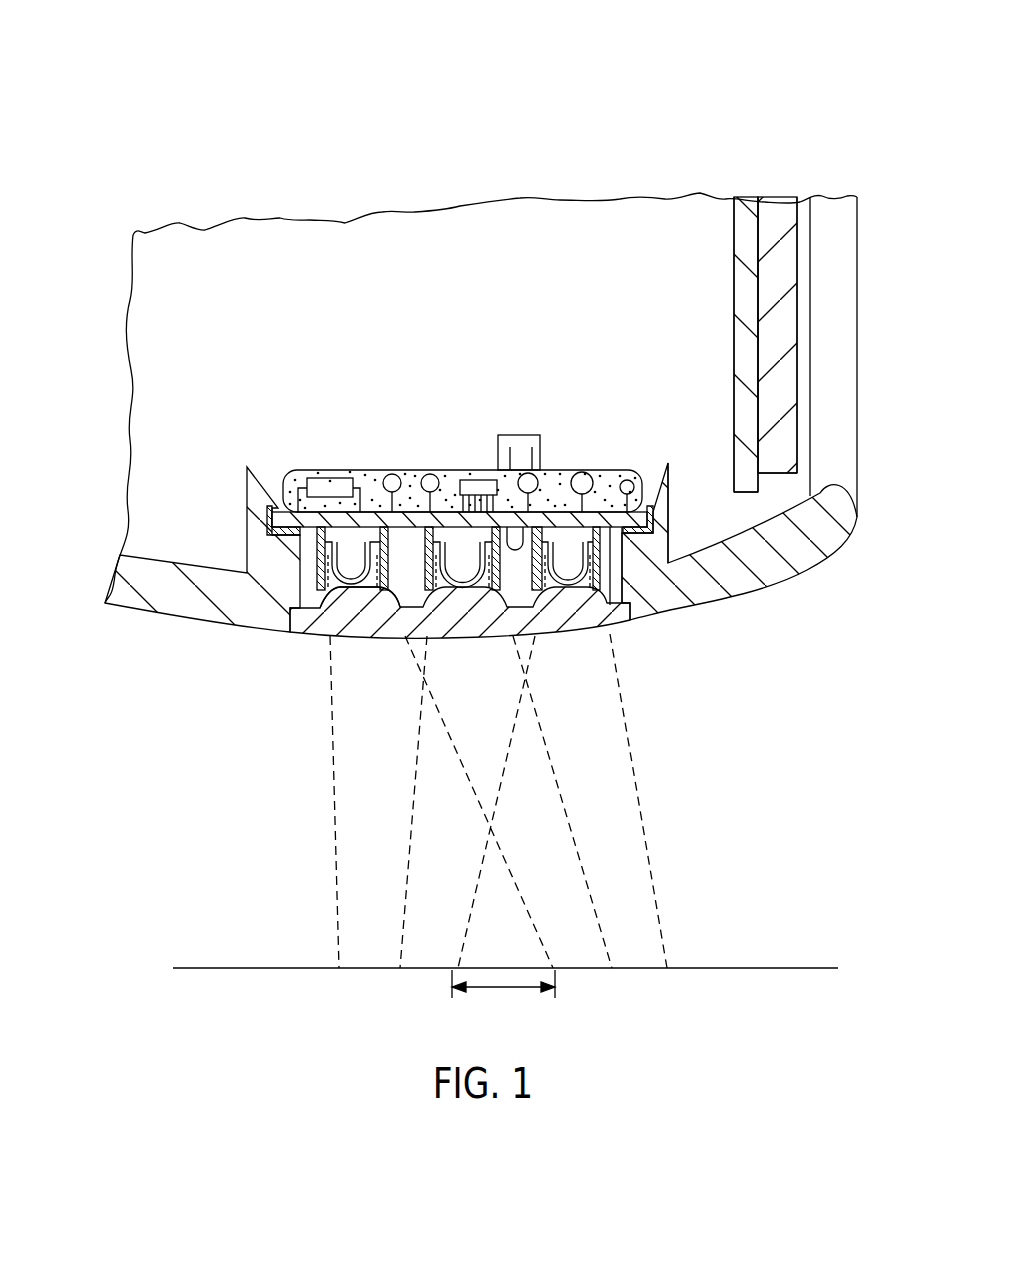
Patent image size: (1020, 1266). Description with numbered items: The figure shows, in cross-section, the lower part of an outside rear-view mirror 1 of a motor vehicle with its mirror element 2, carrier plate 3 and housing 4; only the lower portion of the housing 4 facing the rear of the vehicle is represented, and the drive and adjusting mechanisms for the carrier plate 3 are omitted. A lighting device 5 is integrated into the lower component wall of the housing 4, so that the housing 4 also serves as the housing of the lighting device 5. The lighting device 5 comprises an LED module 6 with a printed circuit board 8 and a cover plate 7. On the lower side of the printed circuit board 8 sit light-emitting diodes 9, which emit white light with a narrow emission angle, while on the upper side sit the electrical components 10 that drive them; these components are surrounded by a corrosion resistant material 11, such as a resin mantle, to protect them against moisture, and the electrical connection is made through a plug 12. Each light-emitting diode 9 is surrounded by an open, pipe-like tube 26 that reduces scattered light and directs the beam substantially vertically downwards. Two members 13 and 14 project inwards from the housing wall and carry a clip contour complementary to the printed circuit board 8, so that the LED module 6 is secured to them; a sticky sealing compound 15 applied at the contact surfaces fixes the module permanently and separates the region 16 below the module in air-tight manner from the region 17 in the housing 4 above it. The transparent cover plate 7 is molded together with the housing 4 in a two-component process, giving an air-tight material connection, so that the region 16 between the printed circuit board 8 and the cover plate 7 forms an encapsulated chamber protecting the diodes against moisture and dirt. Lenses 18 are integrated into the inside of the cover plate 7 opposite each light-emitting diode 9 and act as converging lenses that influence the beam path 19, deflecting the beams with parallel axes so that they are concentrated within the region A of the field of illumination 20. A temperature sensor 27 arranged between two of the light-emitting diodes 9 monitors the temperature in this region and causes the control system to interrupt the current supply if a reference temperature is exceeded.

The outside rear-view mirror 1 is at (582, 167).
The mirror element 2 is at (780, 268).
The carrier plate 3 is at (748, 362).
The housing 4 is at (800, 543).
The lighting device 5 is at (201, 722).
The LED module 6 is at (419, 366).
The cover plate 7 is at (623, 613).
The printed circuit board 8 is at (368, 520).
The light-emitting diodes 9 is at (290, 590).
The electrical components 10 is at (467, 480).
The corrosion resistant material 11 is at (618, 470).
The plug 12 is at (521, 446).
The member 13 is at (247, 490).
The member 14 is at (672, 482).
The sealing compound 15 is at (640, 538).
The region 16 is at (390, 571).
The region 17 is at (534, 286).
The lenses 18 is at (366, 595).
The beam path 19 is at (648, 805).
The field of illumination 20 is at (730, 968).
The pipe-like tube 26 is at (290, 540).
The temperature sensor 27 is at (513, 550).